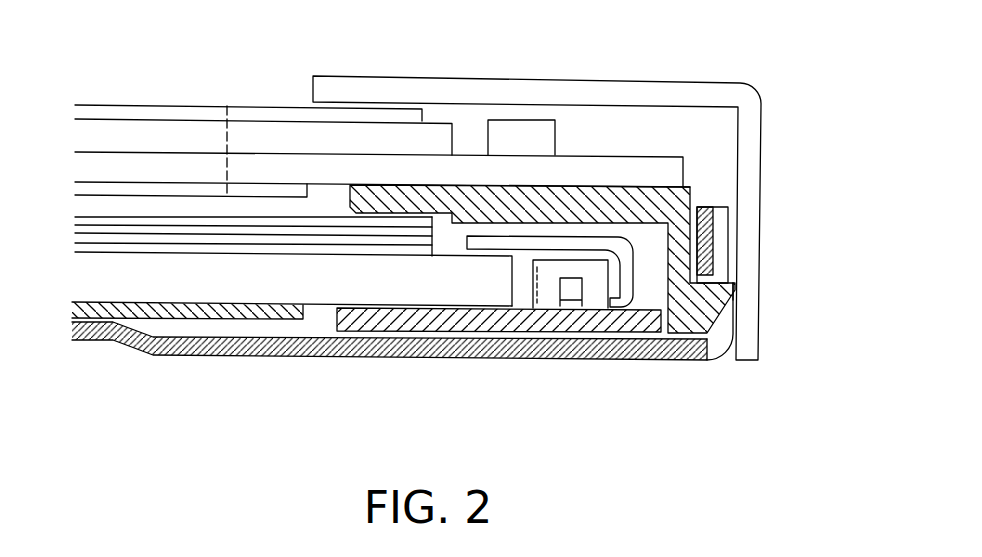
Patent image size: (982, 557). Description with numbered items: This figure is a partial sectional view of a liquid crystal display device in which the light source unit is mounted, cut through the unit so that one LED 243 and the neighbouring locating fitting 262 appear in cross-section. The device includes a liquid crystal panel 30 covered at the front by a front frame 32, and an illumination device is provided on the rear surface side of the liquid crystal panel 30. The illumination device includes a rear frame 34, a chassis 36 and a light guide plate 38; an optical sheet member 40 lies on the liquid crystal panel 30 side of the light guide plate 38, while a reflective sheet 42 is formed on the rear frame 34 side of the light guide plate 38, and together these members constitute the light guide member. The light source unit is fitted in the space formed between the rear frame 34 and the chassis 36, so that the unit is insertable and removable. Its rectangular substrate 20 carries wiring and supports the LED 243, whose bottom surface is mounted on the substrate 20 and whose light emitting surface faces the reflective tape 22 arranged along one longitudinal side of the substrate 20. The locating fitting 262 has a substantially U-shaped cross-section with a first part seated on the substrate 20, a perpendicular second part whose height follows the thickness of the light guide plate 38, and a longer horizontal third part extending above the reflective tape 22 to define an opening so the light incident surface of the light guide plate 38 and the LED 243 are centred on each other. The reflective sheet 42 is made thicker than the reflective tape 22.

The substrate 20 is at (662, 322).
The reflective tape 22 is at (455, 310).
The liquid crystal panel 30 is at (193, 130).
The front frame 32 is at (483, 76).
The rear frame 34 is at (669, 360).
The chassis 36 is at (673, 197).
The light guide plate 38 is at (320, 288).
The optical sheet member 40 is at (277, 225).
The reflective sheet 42 is at (212, 310).
The LED 243 is at (597, 281).
The locating fitting 262 is at (583, 236).